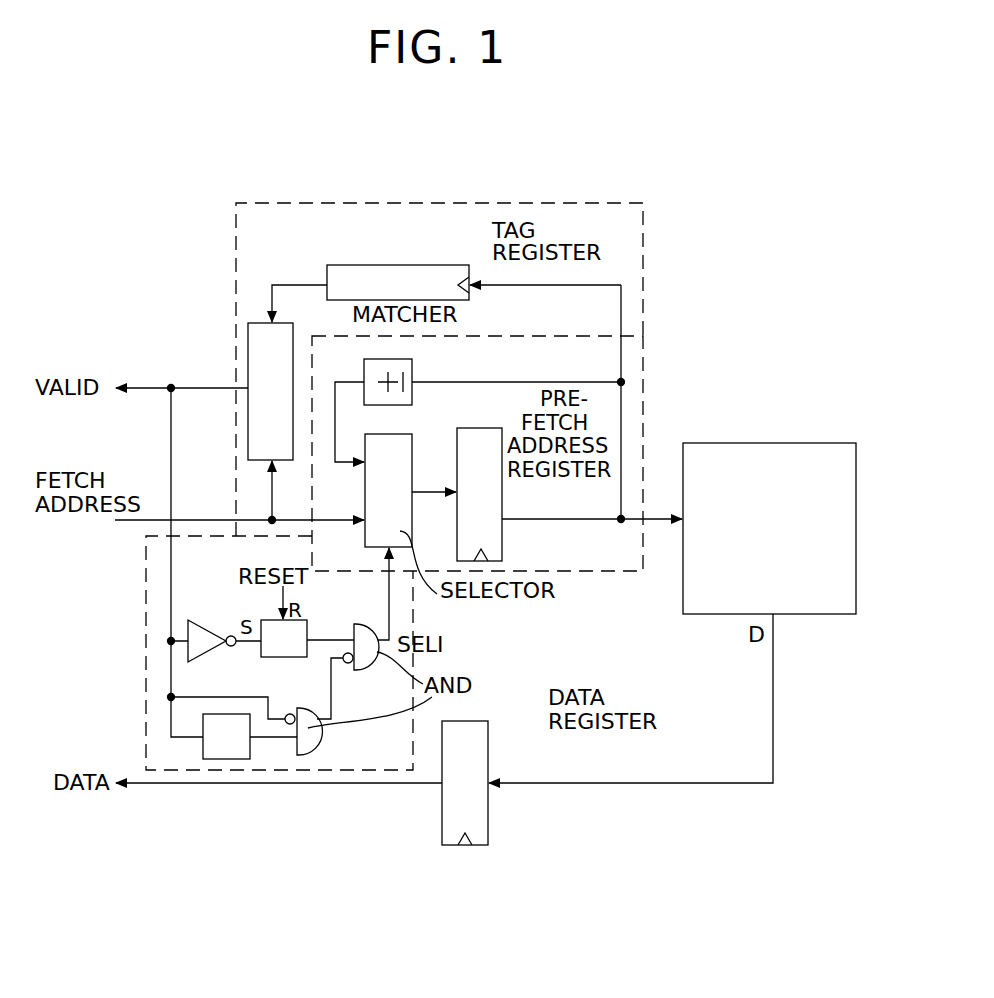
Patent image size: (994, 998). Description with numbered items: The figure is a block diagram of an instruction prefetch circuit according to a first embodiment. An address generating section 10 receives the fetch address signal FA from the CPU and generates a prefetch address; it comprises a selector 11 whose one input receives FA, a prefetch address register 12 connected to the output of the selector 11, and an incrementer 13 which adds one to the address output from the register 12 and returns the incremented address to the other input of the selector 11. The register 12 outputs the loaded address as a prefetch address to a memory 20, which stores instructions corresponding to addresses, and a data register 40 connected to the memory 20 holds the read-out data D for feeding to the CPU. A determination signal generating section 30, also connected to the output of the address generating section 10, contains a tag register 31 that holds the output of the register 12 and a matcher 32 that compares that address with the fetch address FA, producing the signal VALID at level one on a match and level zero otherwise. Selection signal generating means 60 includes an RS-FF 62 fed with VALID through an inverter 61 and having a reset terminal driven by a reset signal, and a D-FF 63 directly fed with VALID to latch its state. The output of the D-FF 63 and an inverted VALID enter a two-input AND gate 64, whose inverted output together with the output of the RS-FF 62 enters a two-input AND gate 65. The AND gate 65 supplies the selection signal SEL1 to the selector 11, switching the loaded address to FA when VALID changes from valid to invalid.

The address generating section 10 is at (646, 373).
The selector 11 is at (412, 437).
The prefetch address register 12 is at (502, 430).
The incrementer 13 is at (412, 362).
The memory 20 is at (783, 443).
The determination signal generating section 30 is at (646, 250).
The tag register 31 is at (463, 265).
The matcher 32 is at (293, 340).
The data register 40 is at (483, 733).
The selection signal generating means 60 is at (140, 668).
The inverter 61 is at (208, 620).
The RS-FF 62 is at (305, 620).
The D-FF 63 is at (237, 714).
The AND gate 64 is at (323, 740).
The AND gate 65 is at (372, 652).